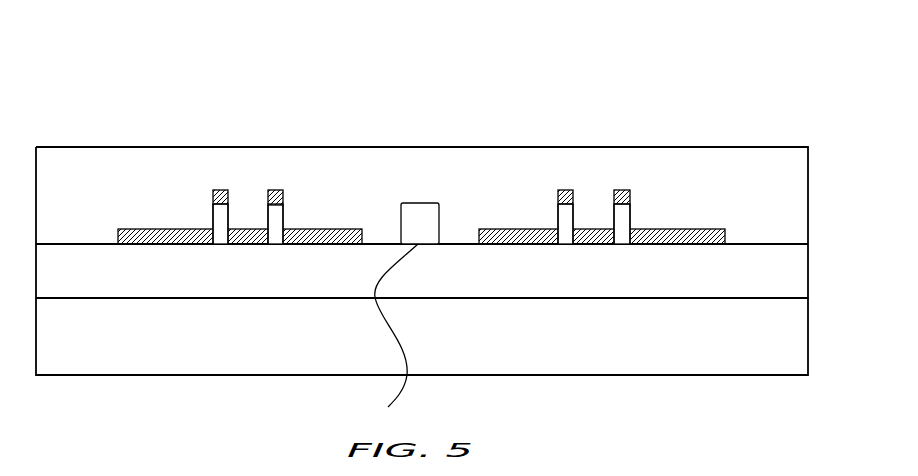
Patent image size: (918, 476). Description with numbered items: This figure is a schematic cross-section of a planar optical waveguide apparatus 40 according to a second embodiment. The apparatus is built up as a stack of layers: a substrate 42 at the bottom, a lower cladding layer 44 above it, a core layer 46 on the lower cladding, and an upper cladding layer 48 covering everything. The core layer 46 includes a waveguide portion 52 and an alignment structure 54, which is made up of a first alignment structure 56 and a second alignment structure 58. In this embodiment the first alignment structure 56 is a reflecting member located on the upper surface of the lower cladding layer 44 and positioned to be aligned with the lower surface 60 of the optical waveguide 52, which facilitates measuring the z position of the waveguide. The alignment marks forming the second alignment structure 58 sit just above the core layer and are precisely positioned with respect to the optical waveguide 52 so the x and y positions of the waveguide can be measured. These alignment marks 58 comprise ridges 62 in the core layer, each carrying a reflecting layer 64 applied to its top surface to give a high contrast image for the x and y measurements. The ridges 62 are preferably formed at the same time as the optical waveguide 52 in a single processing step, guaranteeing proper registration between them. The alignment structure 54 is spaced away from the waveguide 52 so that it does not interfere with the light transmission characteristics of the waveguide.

The planar optical waveguide apparatus 40 is at (768, 62).
The substrate 42 is at (795, 347).
The lower cladding layer 44 is at (795, 282).
The core layer 46 is at (749, 226).
The upper cladding layer 48 is at (800, 173).
The waveguide portion 52 is at (418, 202).
The alignment structure 54 is at (250, 167).
The first alignment structure 56 is at (148, 228).
The second alignment structure 58 is at (223, 190).
The lower surface 60 is at (388, 407).
The ridges 62 is at (213, 212).
The reflecting layer 64 is at (213, 203).